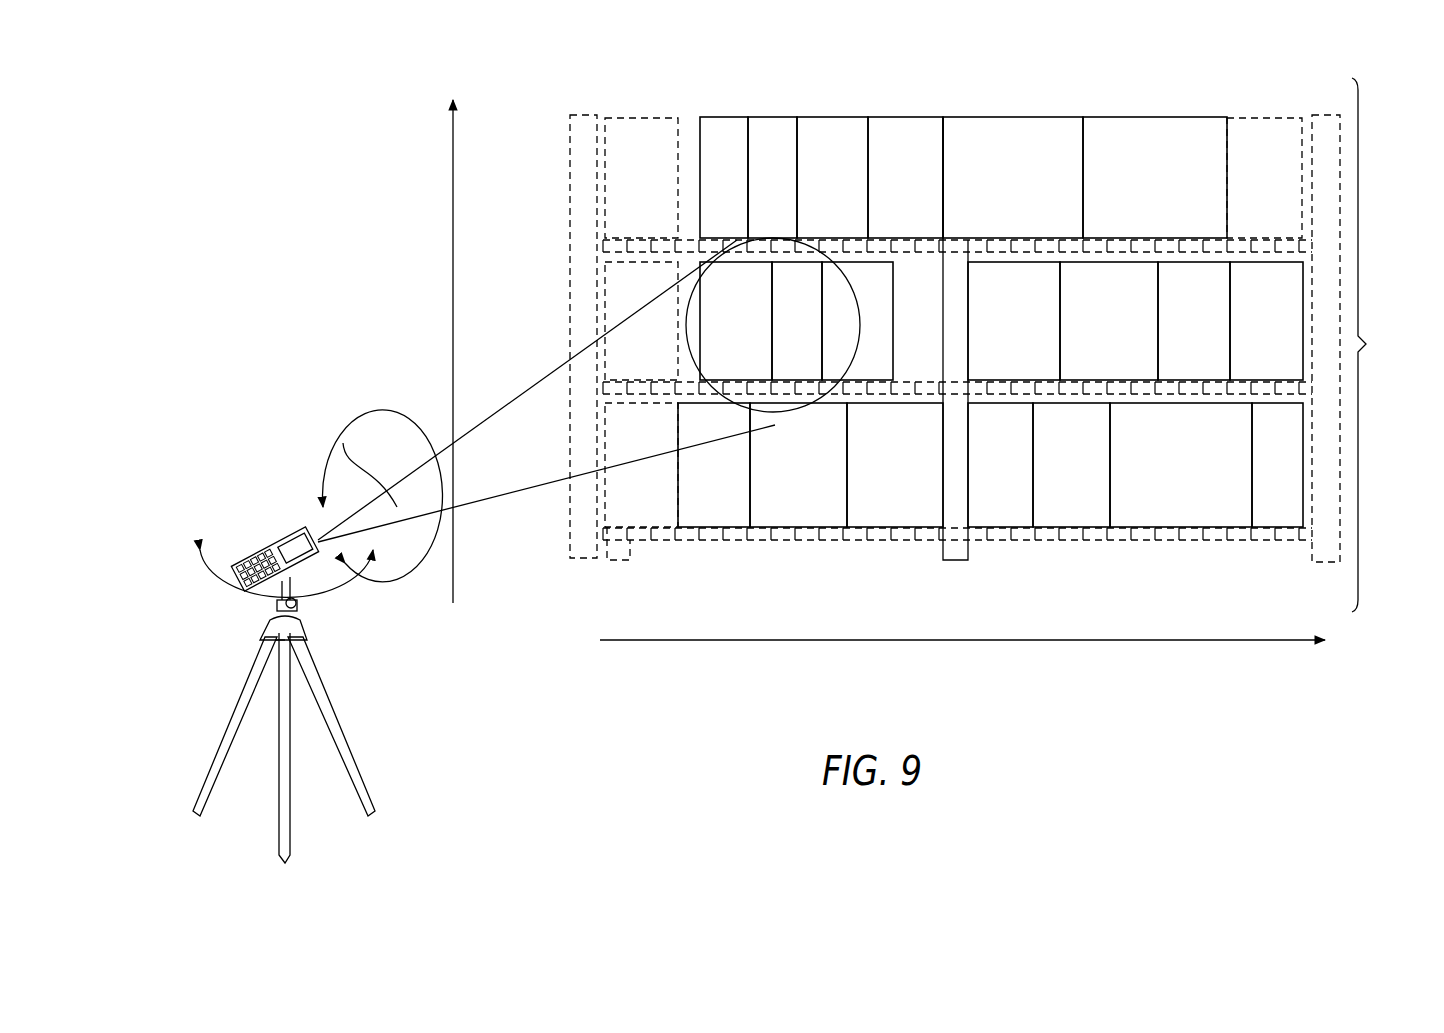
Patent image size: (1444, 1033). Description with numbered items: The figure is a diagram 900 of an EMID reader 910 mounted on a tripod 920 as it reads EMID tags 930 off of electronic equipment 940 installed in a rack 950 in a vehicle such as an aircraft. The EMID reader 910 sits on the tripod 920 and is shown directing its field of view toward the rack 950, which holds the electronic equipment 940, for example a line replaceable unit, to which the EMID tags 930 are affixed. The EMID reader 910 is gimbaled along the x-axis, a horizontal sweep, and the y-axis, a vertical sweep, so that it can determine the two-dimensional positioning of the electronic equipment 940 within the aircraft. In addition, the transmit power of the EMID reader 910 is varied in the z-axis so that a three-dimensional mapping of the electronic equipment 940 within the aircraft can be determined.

The diagram 900 is at (340, 162).
The EMID reader 910 is at (268, 547).
The tripod 920 is at (337, 727).
The EMID tags 930 is at (731, 273).
The electronic equipment 940 is at (735, 315).
The rack 950 is at (1366, 344).